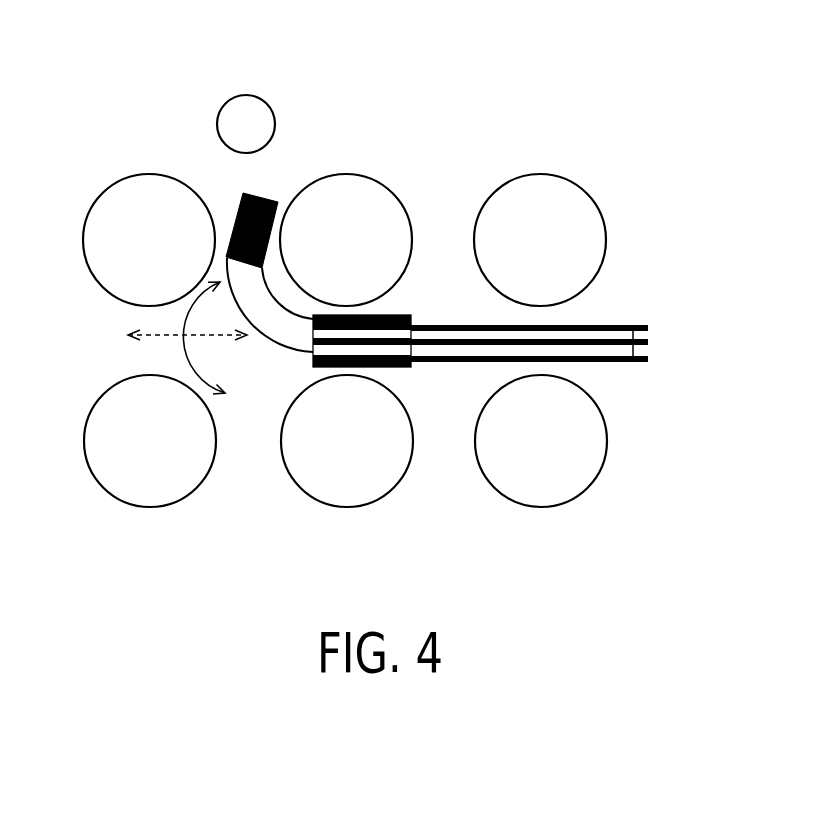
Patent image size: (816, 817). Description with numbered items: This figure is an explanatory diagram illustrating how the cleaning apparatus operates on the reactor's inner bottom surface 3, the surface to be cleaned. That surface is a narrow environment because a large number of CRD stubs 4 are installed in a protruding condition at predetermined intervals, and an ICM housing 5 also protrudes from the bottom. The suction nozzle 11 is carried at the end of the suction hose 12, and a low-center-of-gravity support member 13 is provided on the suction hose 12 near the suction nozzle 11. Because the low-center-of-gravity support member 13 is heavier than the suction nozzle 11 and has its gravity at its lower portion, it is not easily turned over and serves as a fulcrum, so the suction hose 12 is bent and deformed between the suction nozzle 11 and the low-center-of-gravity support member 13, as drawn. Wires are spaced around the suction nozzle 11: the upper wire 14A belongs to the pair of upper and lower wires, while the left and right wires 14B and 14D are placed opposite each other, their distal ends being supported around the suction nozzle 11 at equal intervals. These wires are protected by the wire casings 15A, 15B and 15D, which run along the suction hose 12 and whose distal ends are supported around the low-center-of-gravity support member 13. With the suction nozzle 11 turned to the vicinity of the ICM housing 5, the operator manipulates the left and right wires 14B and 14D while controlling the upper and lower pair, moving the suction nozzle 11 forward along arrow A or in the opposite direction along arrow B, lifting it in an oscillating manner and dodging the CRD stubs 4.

The inner bottom surface 3 is at (46, 354).
The CRD stubs 4 is at (149, 174).
The ICM housing 5 is at (248, 95).
The suction nozzle 11 is at (268, 198).
The suction hose 12 is at (288, 350).
The low-center-of-gravity support member 13 is at (384, 367).
The upper wire 14A is at (412, 318).
The left wire 14B is at (402, 367).
The right wire 14D is at (400, 315).
The wire casing 15A is at (648, 343).
The wire casing 15B is at (603, 362).
The wire casing 15D is at (603, 326).